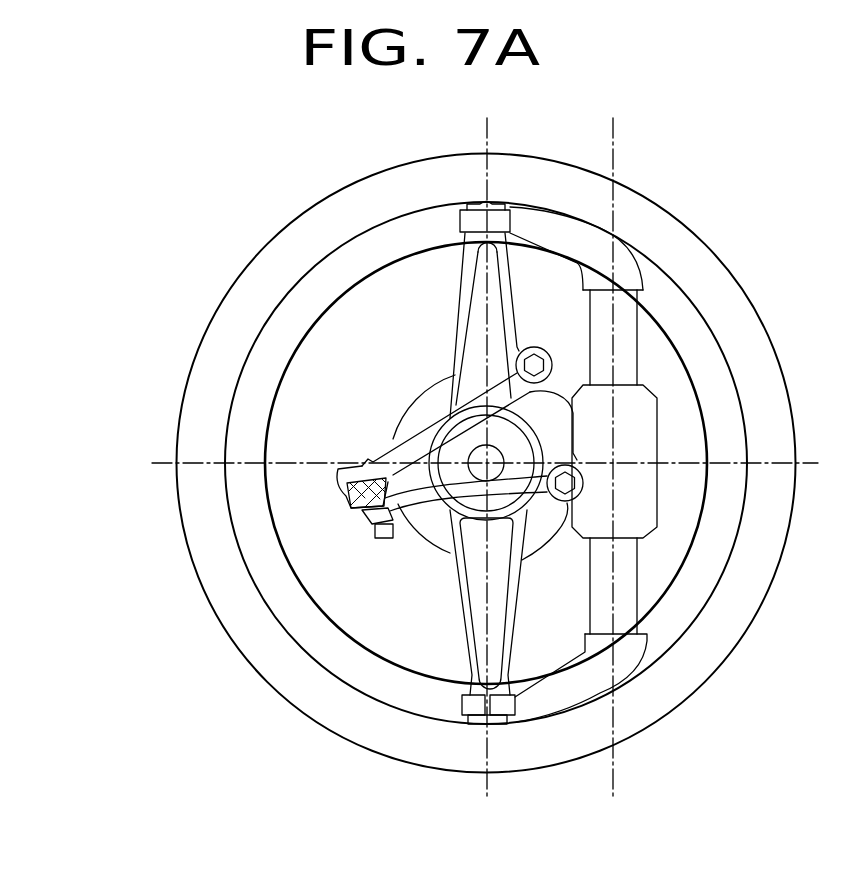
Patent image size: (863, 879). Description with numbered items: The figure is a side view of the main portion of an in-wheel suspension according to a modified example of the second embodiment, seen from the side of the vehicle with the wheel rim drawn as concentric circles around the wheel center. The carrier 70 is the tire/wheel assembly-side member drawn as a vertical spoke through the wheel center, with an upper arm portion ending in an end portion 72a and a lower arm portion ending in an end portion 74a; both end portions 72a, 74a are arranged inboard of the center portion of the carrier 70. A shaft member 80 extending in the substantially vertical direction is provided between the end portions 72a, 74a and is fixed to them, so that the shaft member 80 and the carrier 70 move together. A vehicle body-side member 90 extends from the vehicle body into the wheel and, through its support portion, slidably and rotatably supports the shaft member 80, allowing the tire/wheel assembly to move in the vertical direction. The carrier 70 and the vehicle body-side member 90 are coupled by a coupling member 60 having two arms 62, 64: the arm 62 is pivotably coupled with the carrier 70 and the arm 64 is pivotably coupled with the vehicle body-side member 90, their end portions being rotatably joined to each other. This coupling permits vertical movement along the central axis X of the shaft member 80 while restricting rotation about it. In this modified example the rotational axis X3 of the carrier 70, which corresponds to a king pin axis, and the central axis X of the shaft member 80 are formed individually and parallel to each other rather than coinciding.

The coupling member 60 is at (355, 450).
The arm 62 is at (418, 437).
The arm 64 is at (412, 505).
The carrier 70 is at (462, 628).
The end portion of the arm portion 72a is at (468, 205).
The end portion of the arm portion 74a is at (477, 727).
The shaft member 80 is at (632, 627).
The vehicle body-side member 90 is at (643, 509).
The rotational axis of the carrier X3 is at (490, 730).
The central axis of the shaft member X is at (617, 770).